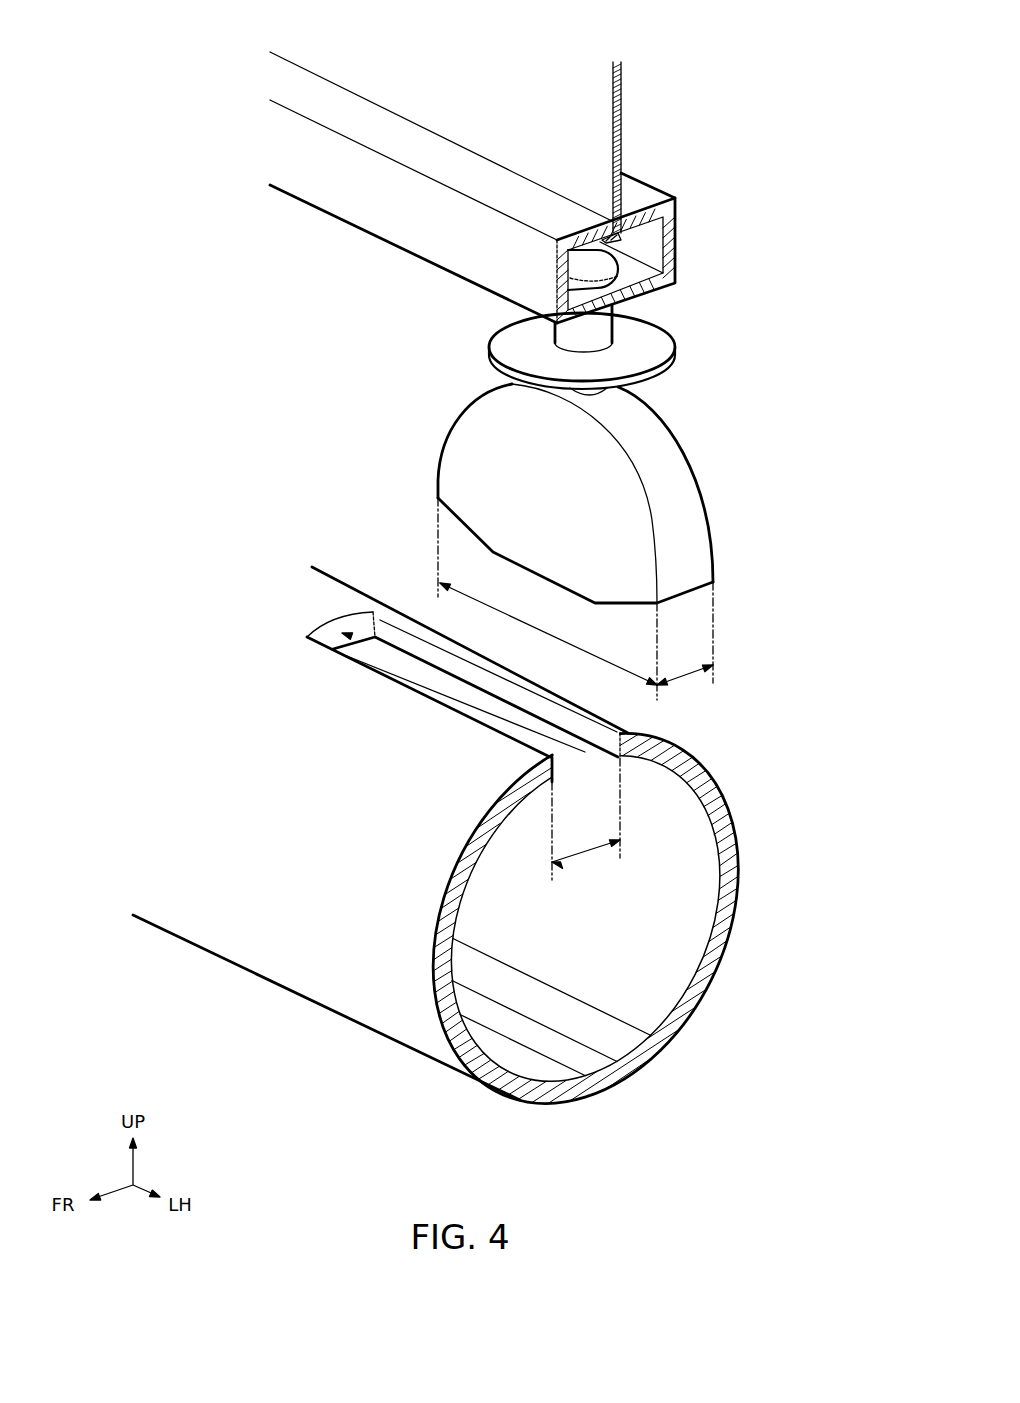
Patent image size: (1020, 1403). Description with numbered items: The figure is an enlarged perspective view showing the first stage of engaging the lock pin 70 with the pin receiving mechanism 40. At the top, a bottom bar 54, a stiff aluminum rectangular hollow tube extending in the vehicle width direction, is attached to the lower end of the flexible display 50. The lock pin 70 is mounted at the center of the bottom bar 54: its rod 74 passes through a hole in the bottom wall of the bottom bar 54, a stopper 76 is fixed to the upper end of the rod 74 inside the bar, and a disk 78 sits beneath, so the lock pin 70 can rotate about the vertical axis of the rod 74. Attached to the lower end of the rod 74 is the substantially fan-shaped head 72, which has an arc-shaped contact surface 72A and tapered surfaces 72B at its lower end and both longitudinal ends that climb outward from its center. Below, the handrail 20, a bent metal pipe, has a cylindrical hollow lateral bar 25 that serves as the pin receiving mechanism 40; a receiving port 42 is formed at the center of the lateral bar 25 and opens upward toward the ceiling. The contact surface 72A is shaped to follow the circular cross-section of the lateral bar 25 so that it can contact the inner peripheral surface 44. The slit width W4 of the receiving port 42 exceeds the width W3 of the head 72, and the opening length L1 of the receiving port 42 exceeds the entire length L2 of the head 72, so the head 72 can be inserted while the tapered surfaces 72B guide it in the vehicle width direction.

The handrail 20 is at (475, 864).
The lateral bar 25 is at (475, 864).
The pin receiving mechanism 40 is at (656, 718).
The receiving port 42 is at (398, 637).
The inner peripheral surface 44 is at (693, 867).
The flexible display 50 is at (598, 116).
The bottom bar 54 is at (300, 188).
The lock pin 70 is at (462, 355).
The head 72 is at (574, 512).
The contact surface 72A is at (657, 462).
The tapered surface 72B is at (532, 570).
The rod 74 is at (602, 332).
The stopper 76 is at (619, 255).
The disk 78 is at (667, 368).
The opening length L1 is at (425, 672).
The entire length L2 is at (575, 599).
The width W3 is at (685, 665).
The slit width W4 is at (586, 819).